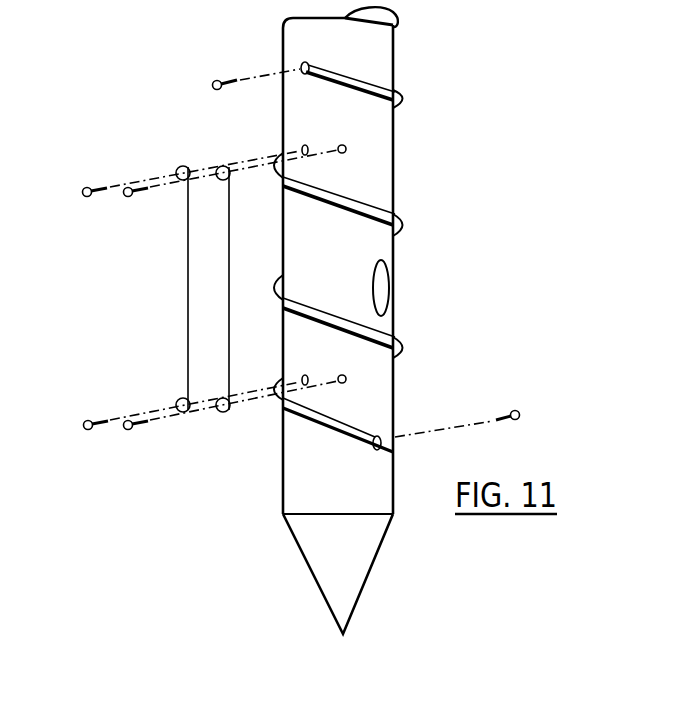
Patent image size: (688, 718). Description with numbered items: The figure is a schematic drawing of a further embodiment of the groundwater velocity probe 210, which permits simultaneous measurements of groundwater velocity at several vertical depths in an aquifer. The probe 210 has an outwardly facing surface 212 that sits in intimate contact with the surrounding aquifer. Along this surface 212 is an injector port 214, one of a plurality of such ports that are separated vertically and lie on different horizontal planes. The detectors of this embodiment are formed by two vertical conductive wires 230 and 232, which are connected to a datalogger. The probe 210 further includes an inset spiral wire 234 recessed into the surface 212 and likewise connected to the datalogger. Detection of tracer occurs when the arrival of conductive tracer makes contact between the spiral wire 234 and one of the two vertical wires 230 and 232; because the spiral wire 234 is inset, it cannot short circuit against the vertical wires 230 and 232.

The probe 210 is at (455, 124).
The outwardly facing surface 212 is at (356, 54).
The injector port 214 is at (383, 290).
The vertical conductive wire 230 is at (188, 284).
The vertical conductive wire 232 is at (229, 238).
The inset spiral wire 234 is at (403, 101).